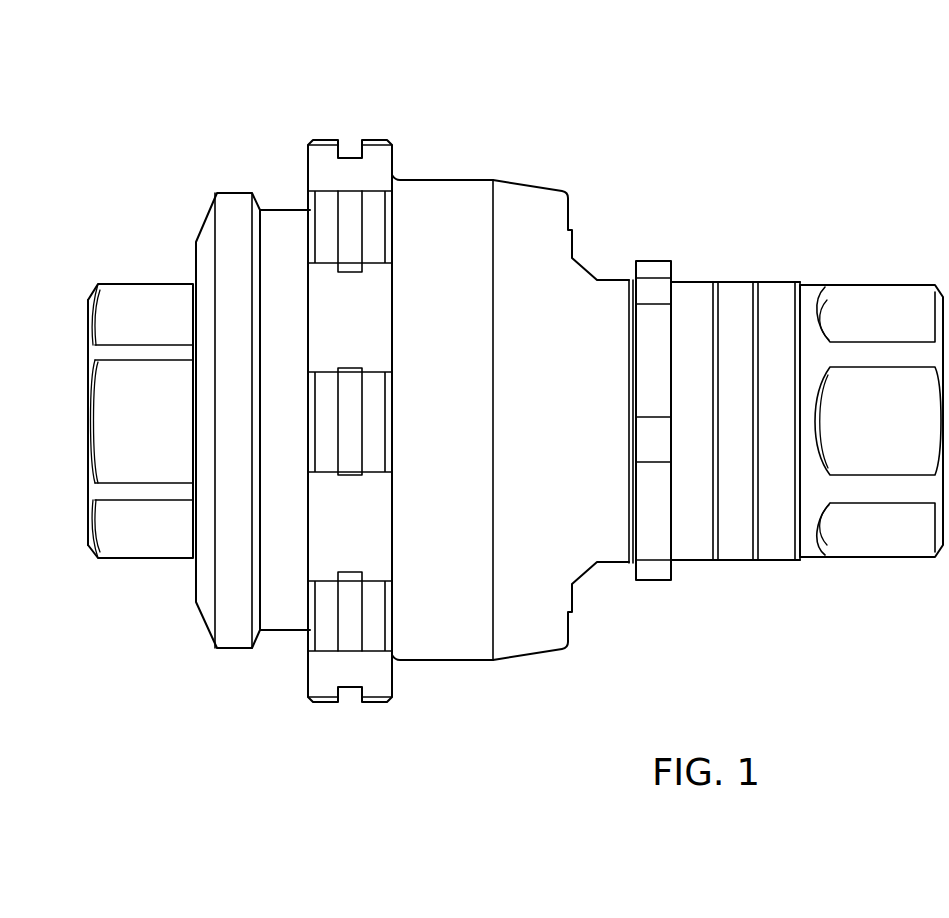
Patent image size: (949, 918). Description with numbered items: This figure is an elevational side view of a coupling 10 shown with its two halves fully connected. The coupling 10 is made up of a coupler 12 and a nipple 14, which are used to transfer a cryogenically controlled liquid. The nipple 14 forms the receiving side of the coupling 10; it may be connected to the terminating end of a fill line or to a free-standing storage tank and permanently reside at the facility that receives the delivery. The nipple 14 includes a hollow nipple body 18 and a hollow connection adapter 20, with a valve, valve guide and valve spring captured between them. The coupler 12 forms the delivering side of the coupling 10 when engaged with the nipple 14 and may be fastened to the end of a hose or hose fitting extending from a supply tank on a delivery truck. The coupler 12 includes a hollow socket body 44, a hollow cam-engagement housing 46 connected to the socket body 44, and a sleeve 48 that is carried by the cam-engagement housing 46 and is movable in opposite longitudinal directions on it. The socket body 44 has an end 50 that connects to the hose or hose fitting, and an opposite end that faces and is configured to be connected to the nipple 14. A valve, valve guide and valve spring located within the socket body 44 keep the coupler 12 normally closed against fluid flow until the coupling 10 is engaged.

The coupling 10 is at (748, 90).
The coupler 12 is at (233, 644).
The nipple 14 is at (653, 577).
The nipple body 18 is at (615, 279).
The connection adapter 20 is at (913, 548).
The socket body 44 is at (118, 557).
The cam-engagement housing 46 is at (277, 210).
The sleeve 48 is at (455, 662).
The end 50 is at (80, 415).